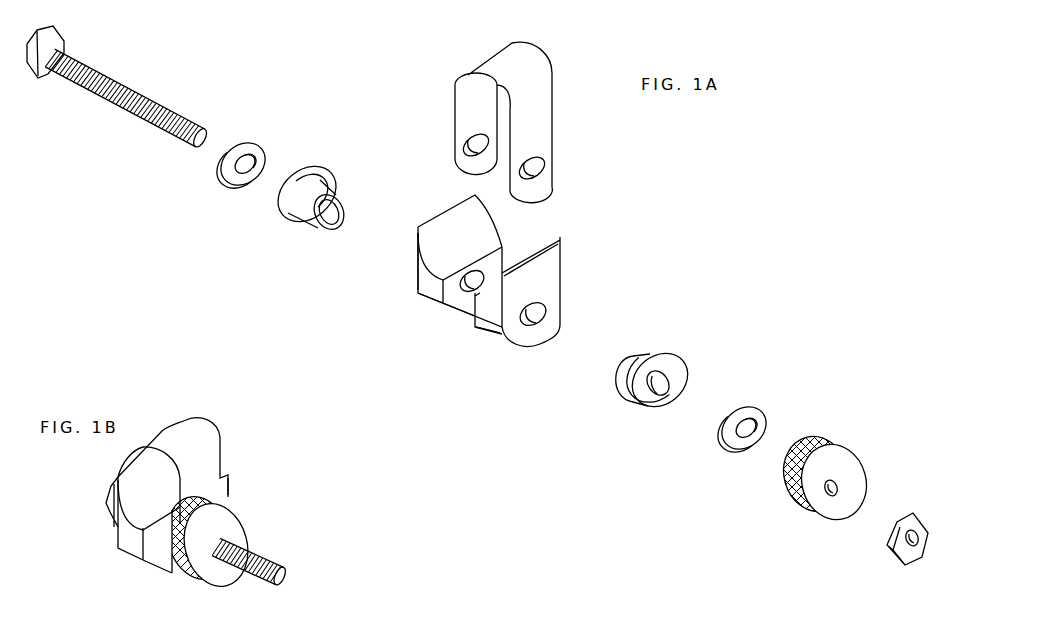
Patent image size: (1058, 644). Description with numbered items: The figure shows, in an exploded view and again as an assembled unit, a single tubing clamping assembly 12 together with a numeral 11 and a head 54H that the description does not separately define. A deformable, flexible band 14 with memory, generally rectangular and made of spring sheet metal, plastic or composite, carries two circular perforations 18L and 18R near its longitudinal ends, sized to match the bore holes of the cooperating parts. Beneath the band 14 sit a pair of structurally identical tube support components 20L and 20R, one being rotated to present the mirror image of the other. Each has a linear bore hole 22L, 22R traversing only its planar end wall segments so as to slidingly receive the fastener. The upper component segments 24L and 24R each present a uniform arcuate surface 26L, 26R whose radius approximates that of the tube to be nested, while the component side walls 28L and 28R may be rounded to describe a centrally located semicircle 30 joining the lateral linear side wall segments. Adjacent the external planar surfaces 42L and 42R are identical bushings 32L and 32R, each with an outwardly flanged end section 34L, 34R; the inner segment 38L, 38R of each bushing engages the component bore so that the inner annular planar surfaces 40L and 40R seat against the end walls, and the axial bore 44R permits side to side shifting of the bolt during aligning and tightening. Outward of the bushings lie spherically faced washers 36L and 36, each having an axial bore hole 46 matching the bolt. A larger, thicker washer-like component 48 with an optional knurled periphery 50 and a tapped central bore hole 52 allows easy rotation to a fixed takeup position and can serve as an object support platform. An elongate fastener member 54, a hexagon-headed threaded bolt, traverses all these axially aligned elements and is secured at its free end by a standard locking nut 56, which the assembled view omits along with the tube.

In FIG. 1A, the leg end of strap 11 is at (540, 200).
In FIG. 1A, the clamping assembly 12 is at (506, 106).
In FIG. 1B, the clamping assembly 12 is at (179, 457).
In FIG. 1A, the flexible band 14 is at (505, 60).
In FIG. 1B, the flexible band 14 is at (168, 441).
In FIG. 1A, the circular perforation 18L is at (460, 163).
In FIG. 1A, the circular perforation 18R is at (556, 170).
In FIG. 1A, the tube support component 20L is at (454, 254).
In FIG. 1A, the tube support component 20R is at (530, 299).
In FIG. 1A, the linear bore hole 22L is at (503, 254).
In FIG. 1A, the linear bore hole 22R is at (553, 323).
In FIG. 1A, the upper component segment 24L is at (421, 289).
In FIG. 1B, the upper component segment 24L is at (124, 520).
In FIG. 1A, the upper component segment 24R is at (493, 334).
In FIG. 1B, the upper component segment 24R is at (163, 558).
In FIG. 1A, the arcuate surface 26L is at (470, 241).
In FIG. 1B, the arcuate surface 26L is at (161, 500).
In FIG. 1A, the arcuate surface 26R is at (466, 300).
In FIG. 1A, the component side wall 28L is at (438, 308).
In FIG. 1A, the component side wall 28R is at (485, 332).
In FIG. 1A, the semicircle 30 is at (563, 325).
In FIG. 1A, the bushing 32L is at (313, 200).
In FIG. 1A, the bushing 32R is at (647, 382).
In FIG. 1A, the outwardly flanged end section 34L is at (294, 173).
In FIG. 1A, the outwardly flanged end section 34R is at (650, 398).
In FIG. 1A, the spherically faced washer 36L is at (228, 170).
In FIG. 1A, the spherically faced washer 36 is at (770, 418).
In FIG. 1A, the inner segment of bushing 38L is at (313, 221).
In FIG. 1A, the inner segment of bushing 38R is at (613, 373).
In FIG. 1A, the inner annular planar surface 40L is at (334, 192).
In FIG. 1A, the inner annular planar surface 40R is at (648, 354).
In FIG. 1A, the external planar surface 42L is at (417, 238).
In FIG. 1A, the external planar surface 42R is at (548, 285).
In FIG. 1B, the external planar surface 42R is at (228, 480).
In FIG. 1A, the axial bore hole 44R is at (683, 365).
In FIG. 1A, the axial bore hole 46 is at (252, 160).
In FIG. 1A, the washer-like component 48 is at (808, 467).
In FIG. 1B, the washer-like component 48 is at (243, 517).
In FIG. 1A, the knurled periphery 50 is at (793, 464).
In FIG. 1A, the tapped central bore hole 52 is at (832, 487).
In FIG. 1A, the elongate fastener member 54 is at (118, 81).
In FIG. 1B, the elongate fastener member 54 is at (275, 563).
In FIG. 1A, the bolt head 54H is at (66, 40).
In FIG. 1B, the bolt head 54H is at (115, 500).
In FIG. 1A, the locking nut 56 is at (895, 563).